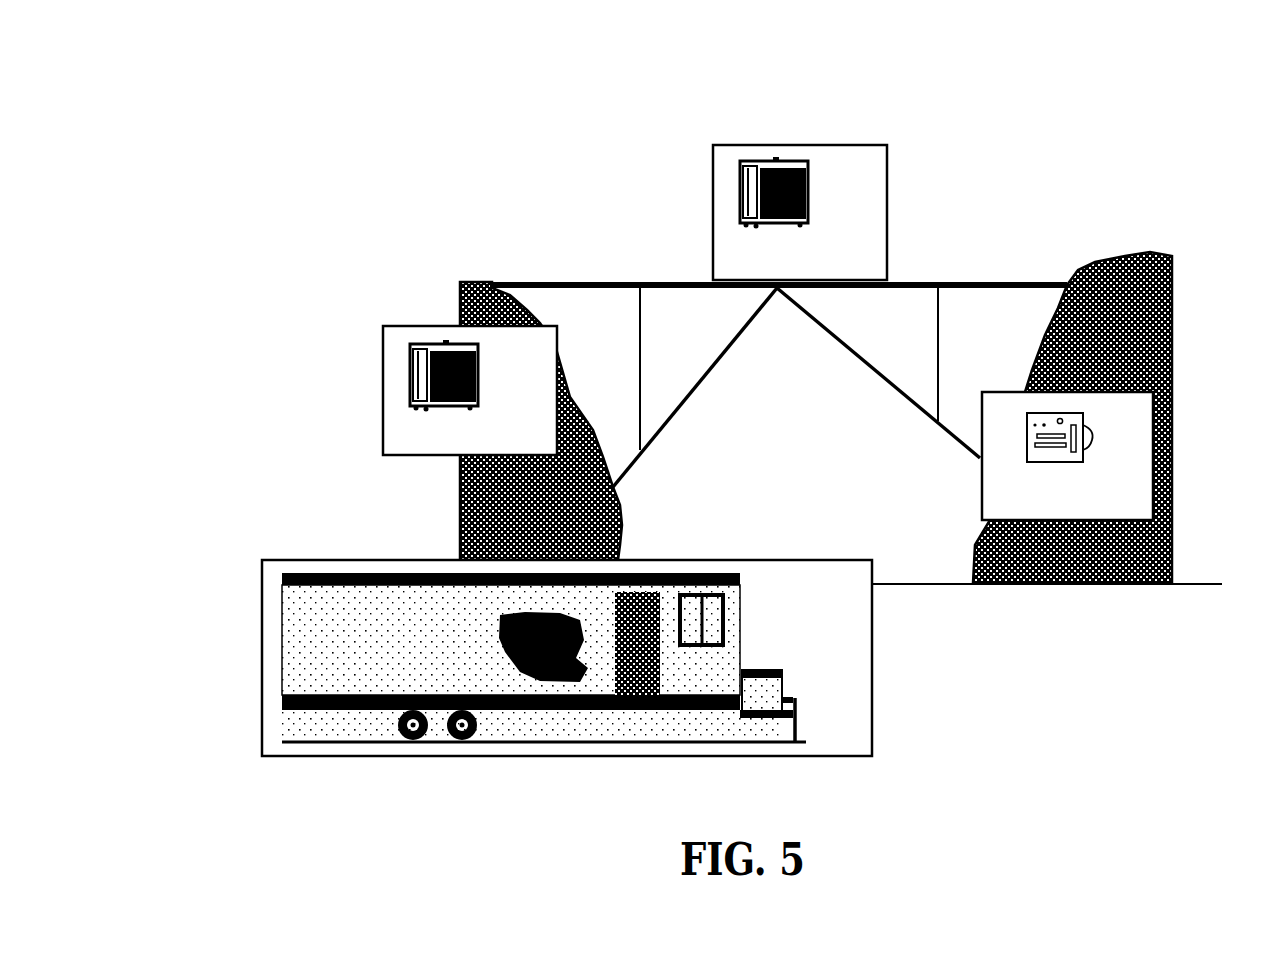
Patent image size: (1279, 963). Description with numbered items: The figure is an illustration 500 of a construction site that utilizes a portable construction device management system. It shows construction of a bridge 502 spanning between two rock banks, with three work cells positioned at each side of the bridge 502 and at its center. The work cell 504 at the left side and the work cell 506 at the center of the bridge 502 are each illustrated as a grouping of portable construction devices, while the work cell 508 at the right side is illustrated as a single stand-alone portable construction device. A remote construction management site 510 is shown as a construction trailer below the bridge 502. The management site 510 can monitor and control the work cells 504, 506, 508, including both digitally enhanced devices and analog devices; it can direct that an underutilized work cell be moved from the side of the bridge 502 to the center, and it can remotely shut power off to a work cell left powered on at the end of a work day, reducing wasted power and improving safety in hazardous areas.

The illustration 500 is at (213, 55).
The bridge 502 is at (993, 281).
The work cell 504 is at (383, 371).
The work cell 506 is at (783, 143).
The work cell 508 is at (1173, 417).
The remote construction management site 510 is at (262, 630).